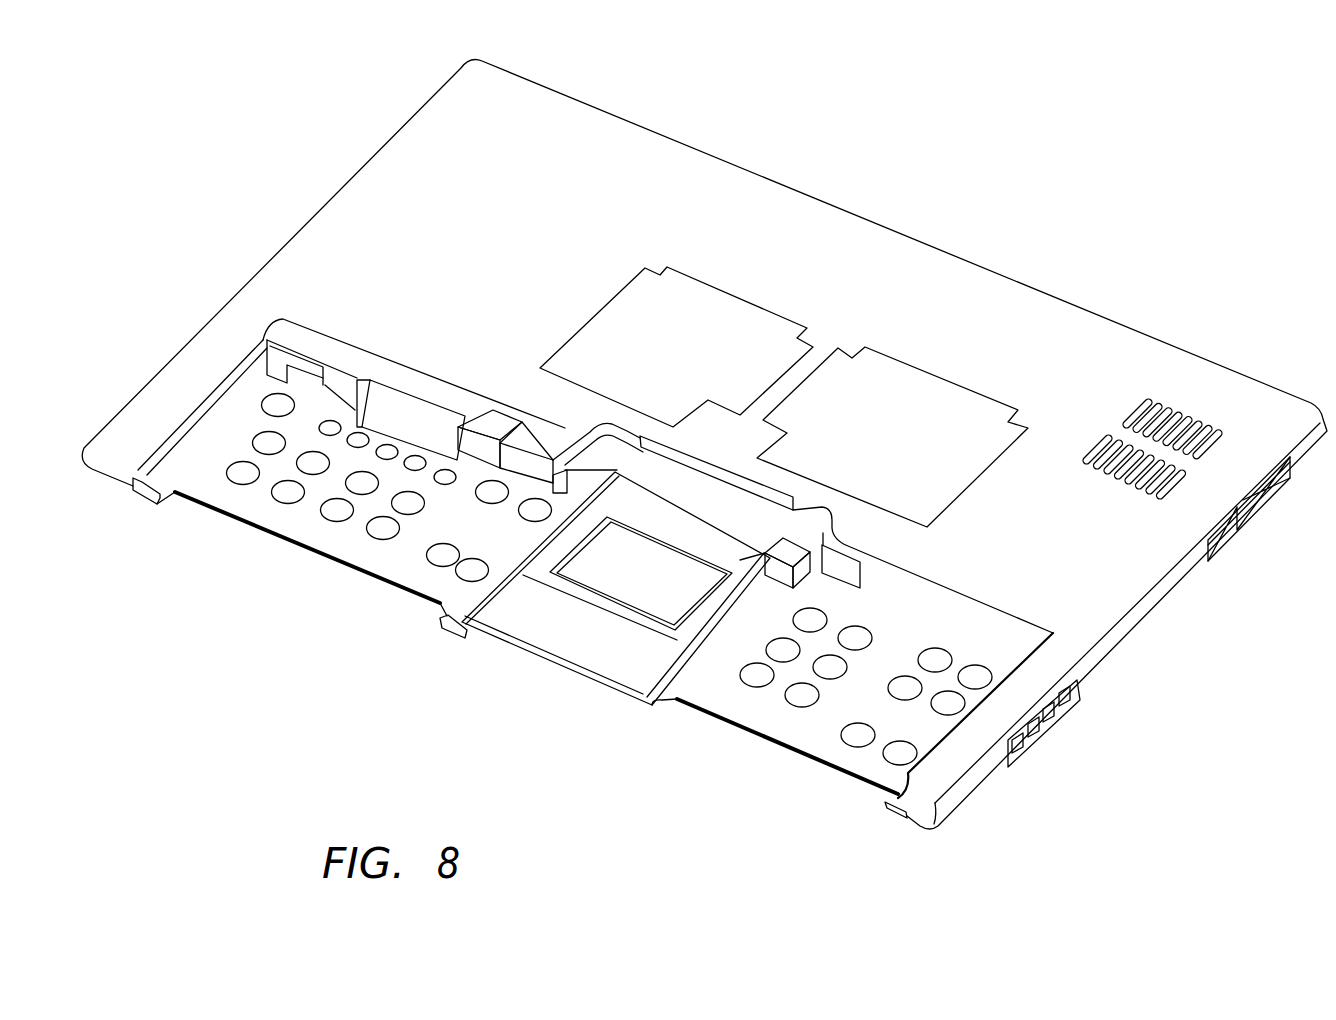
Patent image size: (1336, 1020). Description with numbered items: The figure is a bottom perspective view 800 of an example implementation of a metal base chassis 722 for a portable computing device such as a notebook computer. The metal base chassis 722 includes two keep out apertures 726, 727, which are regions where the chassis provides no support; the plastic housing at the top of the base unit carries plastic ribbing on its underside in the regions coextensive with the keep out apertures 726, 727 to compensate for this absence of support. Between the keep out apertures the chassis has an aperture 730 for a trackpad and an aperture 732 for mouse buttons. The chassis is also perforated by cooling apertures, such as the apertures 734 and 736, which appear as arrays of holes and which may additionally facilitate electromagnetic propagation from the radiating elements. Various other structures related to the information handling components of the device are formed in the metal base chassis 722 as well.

The bottom perspective view 800 is at (317, 728).
The metal base chassis 722 is at (1127, 638).
The keep out aperture 726 is at (845, 734).
The keep out aperture 727 is at (349, 524).
The aperture for a trackpad 730 is at (589, 583).
The aperture for mouse buttons 732 is at (532, 642).
The cooling aperture 734 is at (836, 766).
The cooling aperture 736 is at (361, 566).